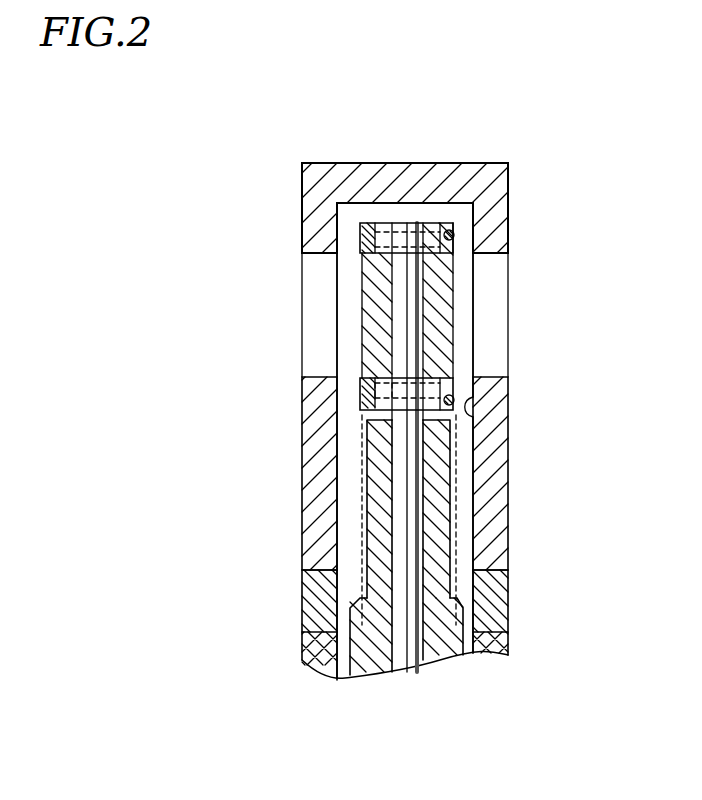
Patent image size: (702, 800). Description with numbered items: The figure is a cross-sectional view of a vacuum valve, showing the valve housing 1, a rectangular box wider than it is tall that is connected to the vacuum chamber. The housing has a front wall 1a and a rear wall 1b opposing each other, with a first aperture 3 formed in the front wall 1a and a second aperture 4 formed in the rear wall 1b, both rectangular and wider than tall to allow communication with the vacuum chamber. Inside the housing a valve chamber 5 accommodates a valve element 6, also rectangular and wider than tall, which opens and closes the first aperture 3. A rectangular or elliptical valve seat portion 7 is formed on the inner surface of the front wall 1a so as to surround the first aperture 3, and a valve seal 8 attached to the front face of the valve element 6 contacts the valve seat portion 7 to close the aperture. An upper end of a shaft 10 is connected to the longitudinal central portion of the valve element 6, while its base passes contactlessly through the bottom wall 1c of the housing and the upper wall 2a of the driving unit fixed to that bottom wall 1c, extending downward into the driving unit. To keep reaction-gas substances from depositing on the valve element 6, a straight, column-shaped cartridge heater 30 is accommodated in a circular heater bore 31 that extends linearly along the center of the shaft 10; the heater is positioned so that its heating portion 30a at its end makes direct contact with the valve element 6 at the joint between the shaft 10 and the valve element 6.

The valve housing 1 is at (452, 146).
The front wall 1a is at (485, 472).
The rear wall 1b is at (327, 435).
The bottom wall 1c is at (490, 598).
The upper wall 2a is at (485, 647).
The first aperture 3 is at (490, 290).
The second aperture 4 is at (312, 312).
The valve chamber 5 is at (463, 243).
The valve element 6 is at (458, 338).
The valve seat portion 7 is at (470, 417).
The valve seal 8 is at (451, 230).
The shaft 10 is at (455, 637).
The cartridge heater 30 is at (400, 530).
The heating portion 30a is at (397, 343).
The heater bore 31 is at (392, 635).